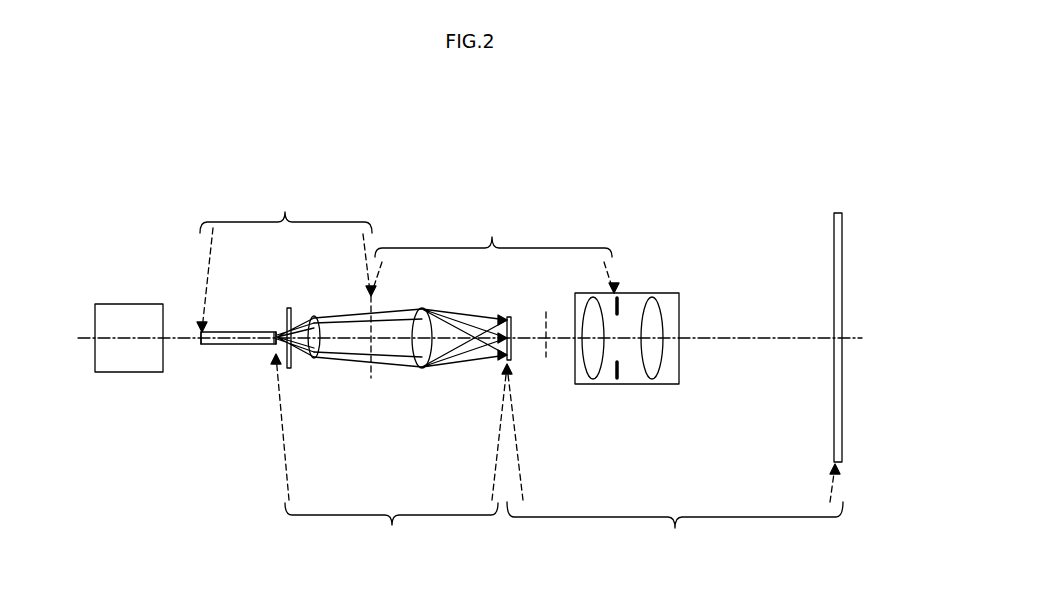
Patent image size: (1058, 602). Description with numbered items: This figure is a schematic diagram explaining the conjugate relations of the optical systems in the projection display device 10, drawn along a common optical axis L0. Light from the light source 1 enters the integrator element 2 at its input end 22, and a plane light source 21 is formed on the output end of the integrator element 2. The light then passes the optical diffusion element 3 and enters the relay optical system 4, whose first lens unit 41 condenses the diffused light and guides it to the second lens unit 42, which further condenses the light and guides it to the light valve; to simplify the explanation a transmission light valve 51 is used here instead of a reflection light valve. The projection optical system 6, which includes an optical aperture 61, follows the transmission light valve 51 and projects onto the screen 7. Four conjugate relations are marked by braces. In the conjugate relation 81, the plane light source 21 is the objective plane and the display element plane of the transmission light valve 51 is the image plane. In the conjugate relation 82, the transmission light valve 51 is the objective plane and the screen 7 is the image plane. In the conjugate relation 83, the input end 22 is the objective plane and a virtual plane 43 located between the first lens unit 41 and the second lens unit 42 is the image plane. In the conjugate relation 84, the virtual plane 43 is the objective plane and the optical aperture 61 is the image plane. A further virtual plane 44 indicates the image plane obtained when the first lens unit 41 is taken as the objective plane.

The light source 1 is at (128, 372).
The integrator element 2 is at (245, 345).
The plane light source 21 is at (275, 331).
The input end 22 is at (192, 347).
The optical diffusion element 3 is at (290, 307).
The relay optical system 4 is at (395, 392).
The first lens unit 41 is at (313, 360).
The second lens unit 42 is at (418, 369).
The virtual plane 43 is at (362, 360).
The virtual plane 44 is at (537, 358).
The transmission light valve 51 is at (508, 317).
The projection optical system 6 is at (627, 344).
The optical aperture 61 is at (623, 307).
The screen 7 is at (833, 233).
The projection display device 10 is at (442, 168).
The optical conjugate relation 81 is at (391, 455).
The optical conjugate relation 82 is at (675, 462).
The optical conjugate relation 83 is at (286, 258).
The optical conjugate relation 84 is at (495, 250).
The optical axis L0 is at (745, 333).